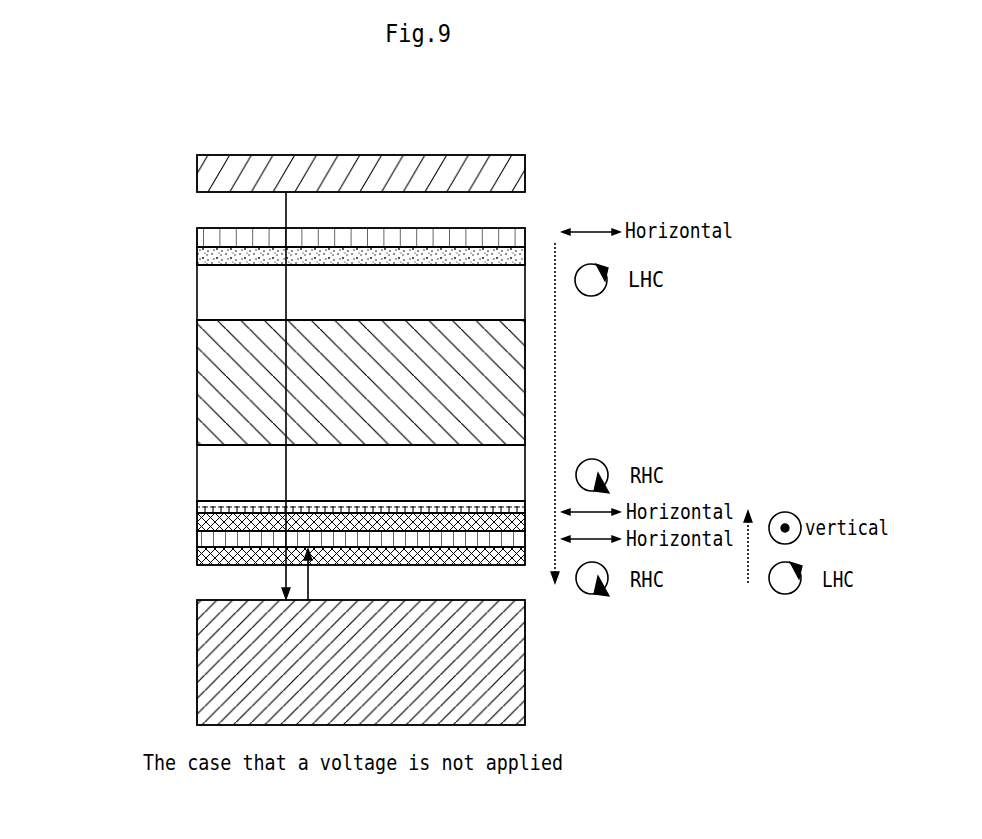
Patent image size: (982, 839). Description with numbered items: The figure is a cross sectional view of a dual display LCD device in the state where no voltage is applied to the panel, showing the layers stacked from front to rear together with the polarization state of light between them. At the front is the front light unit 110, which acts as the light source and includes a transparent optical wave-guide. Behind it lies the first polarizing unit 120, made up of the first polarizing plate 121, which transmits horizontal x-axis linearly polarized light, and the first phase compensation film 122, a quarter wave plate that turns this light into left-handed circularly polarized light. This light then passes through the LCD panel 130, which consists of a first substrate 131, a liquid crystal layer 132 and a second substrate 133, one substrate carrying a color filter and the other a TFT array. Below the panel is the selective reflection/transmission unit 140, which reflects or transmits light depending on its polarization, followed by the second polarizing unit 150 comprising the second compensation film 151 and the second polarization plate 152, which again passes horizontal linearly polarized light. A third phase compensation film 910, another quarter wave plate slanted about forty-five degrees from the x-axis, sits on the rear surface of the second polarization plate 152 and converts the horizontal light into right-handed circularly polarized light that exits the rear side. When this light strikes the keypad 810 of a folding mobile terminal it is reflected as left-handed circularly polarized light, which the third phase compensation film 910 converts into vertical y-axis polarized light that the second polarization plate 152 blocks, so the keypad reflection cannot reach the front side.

The front light unit 110 is at (197, 172).
The first polarizing unit 120 is at (80, 226).
The first polarizing plate 121 is at (197, 234).
The first phase compensation film 122 is at (197, 256).
The liquid crystal display panel 130 is at (80, 310).
The first substrate 131 is at (197, 293).
The liquid crystal layer 132 is at (197, 383).
The second substrate 133 is at (197, 472).
The selective reflection/transmission unit 140 is at (197, 506).
The second polarizing unit 150 is at (84, 512).
The second compensation film 151 is at (197, 521).
The second polarization plate 152 is at (197, 540).
The third phase compensation film 910 is at (197, 558).
The keypad 810 is at (197, 665).